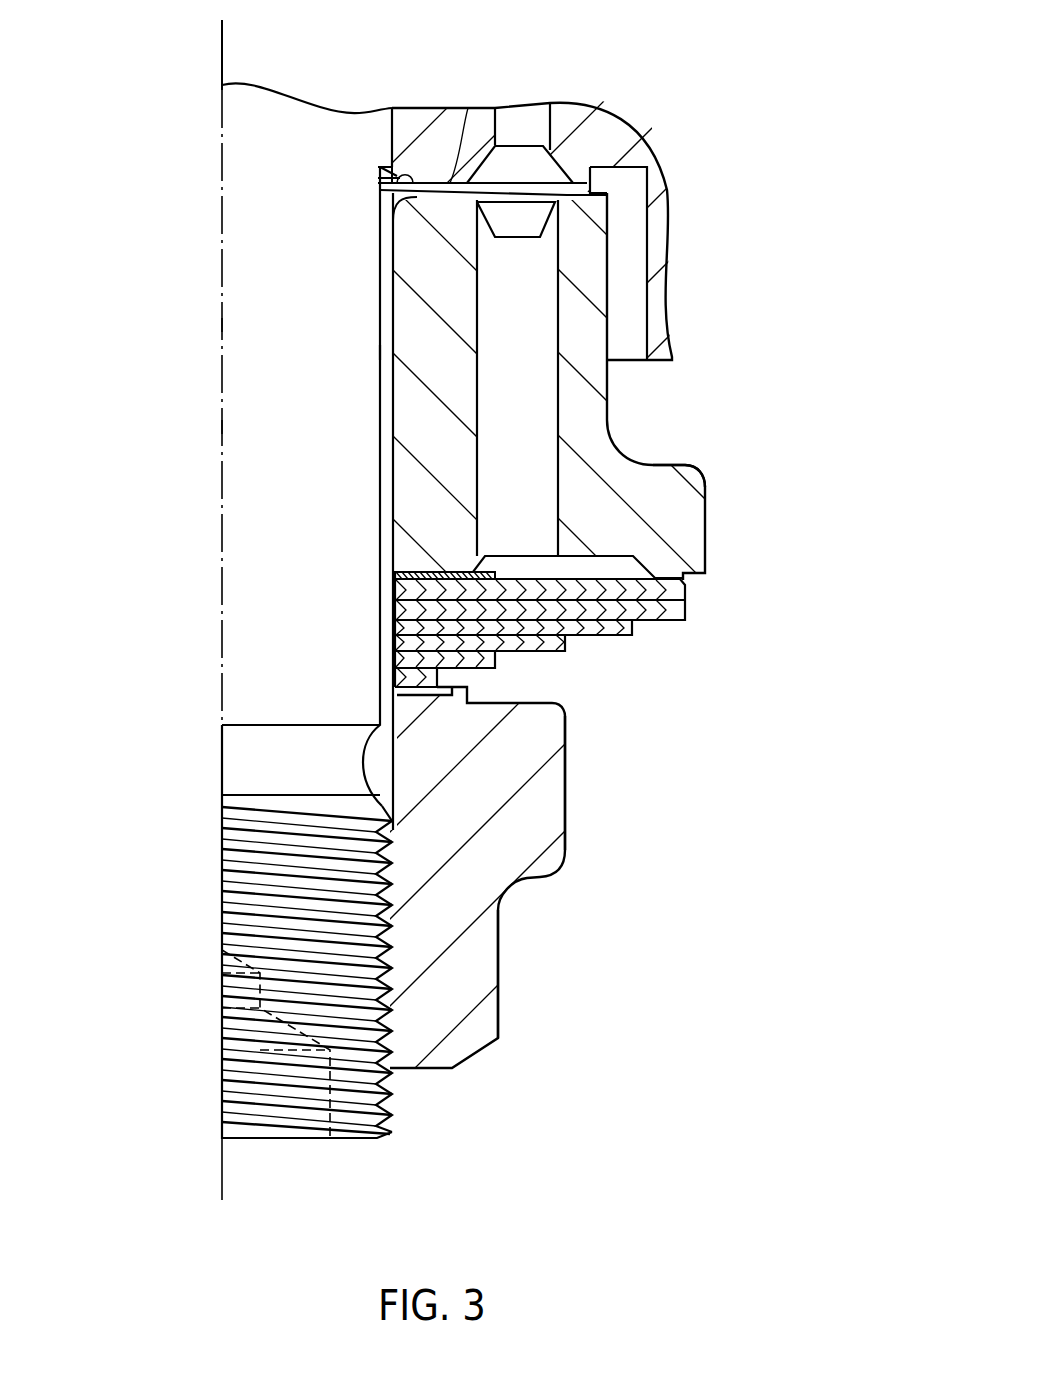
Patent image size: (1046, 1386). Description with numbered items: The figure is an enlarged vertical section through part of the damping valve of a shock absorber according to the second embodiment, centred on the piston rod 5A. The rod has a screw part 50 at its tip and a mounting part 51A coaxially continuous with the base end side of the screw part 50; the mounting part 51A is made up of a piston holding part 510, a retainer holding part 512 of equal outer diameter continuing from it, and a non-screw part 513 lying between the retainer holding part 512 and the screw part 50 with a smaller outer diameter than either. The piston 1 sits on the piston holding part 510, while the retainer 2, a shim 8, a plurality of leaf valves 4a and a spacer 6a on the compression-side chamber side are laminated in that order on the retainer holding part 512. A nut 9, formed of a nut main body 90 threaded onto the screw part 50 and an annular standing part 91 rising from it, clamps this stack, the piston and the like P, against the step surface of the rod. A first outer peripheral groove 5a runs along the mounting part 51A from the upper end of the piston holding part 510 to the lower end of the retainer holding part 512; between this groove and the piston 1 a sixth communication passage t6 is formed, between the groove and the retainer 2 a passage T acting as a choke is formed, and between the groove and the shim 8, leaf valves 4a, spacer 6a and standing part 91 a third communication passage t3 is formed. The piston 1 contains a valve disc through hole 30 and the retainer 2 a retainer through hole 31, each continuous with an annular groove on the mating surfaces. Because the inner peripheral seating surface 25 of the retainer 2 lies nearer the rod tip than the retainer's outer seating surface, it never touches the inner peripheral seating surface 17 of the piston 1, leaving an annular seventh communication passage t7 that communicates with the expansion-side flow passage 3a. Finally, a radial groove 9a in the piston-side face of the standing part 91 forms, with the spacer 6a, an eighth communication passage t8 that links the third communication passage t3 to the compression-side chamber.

The piston 1 is at (638, 156).
The retainer 2 is at (668, 478).
The expansion-side flow passage 3a is at (552, 315).
The first outer peripheral groove 5a is at (380, 458).
The piston rod 5A is at (320, 1162).
The spacer 6a is at (395, 640).
The shim 8 is at (500, 520).
The nut 9 is at (520, 943).
The groove 9a is at (562, 712).
The inner peripheral seating surface 17 is at (417, 207).
The inner peripheral seating surface 25 is at (430, 182).
The valve disc through hole 30 is at (527, 120).
The retainer through hole 31 is at (523, 410).
The leaf valves 4a is at (687, 593).
The screw part 50 is at (212, 918).
The mounting part 51A is at (226, 325).
The nut main body 90 is at (478, 1010).
The standing part 91 is at (535, 822).
The piston holding part 510 is at (222, 115).
The retainer holding part 512 is at (257, 427).
The non-screw part 513 is at (255, 758).
The piston and the like P is at (724, 478).
The passage T is at (380, 355).
The third communication passage t3 is at (395, 576).
The sixth communication passage t6 is at (380, 170).
The seventh communication passage t7 is at (417, 187).
The eighth communication passage t8 is at (395, 688).